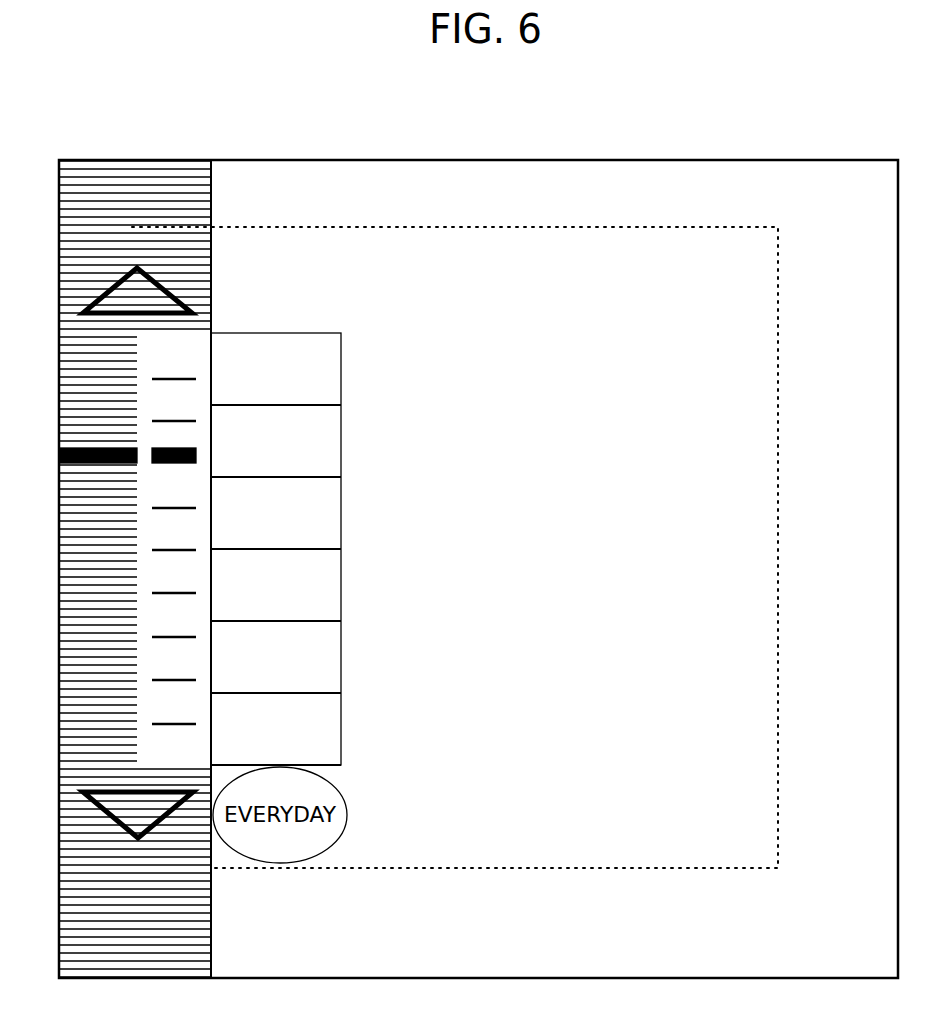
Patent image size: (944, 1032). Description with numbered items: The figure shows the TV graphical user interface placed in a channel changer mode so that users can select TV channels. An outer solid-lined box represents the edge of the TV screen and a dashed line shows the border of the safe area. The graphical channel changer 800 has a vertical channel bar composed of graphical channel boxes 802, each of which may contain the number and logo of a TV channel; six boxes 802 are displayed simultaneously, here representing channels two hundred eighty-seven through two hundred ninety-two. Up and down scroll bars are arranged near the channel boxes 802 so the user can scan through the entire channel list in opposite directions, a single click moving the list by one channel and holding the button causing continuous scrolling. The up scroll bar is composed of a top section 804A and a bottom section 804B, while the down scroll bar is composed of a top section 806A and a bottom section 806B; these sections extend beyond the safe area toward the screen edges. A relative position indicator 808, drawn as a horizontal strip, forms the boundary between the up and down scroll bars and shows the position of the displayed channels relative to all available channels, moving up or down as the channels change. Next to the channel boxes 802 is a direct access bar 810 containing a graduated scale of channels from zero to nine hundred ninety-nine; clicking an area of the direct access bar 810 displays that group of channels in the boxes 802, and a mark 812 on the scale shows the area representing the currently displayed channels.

The graphical channel changer 800 is at (718, 306).
The graphical channel boxes 802 is at (343, 505).
The top section of up scroll bar 804A is at (283, 193).
The bottom section of up scroll bar 804B is at (98, 374).
The top section of down scroll bar 806A is at (97, 706).
The bottom section of down scroll bar 806B is at (170, 955).
The relative position indicator 808 is at (90, 470).
The direct access bar 810 is at (162, 392).
The mark 812 is at (197, 448).